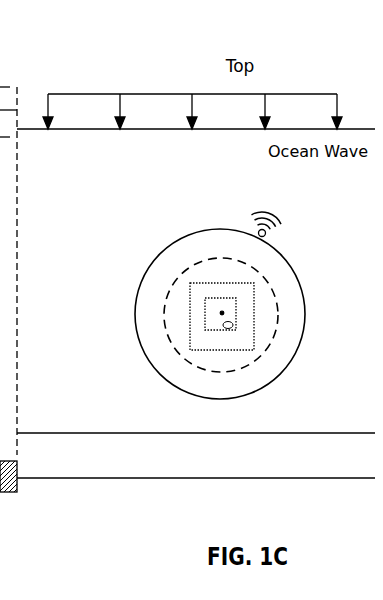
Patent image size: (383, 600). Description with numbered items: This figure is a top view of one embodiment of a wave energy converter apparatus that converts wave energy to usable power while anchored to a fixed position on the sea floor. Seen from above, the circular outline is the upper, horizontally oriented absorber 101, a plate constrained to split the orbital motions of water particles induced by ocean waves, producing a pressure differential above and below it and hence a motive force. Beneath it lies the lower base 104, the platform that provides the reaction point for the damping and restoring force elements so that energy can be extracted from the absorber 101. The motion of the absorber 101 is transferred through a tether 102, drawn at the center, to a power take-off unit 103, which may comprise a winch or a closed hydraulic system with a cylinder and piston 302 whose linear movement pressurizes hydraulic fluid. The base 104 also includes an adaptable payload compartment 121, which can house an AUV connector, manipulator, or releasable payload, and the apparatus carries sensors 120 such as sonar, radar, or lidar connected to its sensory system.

The absorber 101 is at (160, 262).
The tether 102 is at (220, 313).
The power take-off unit 103 is at (207, 306).
The base 104 is at (190, 337).
The sensor 120 is at (281, 224).
The payload compartment 121 is at (238, 337).
The piston 302 is at (240, 322).